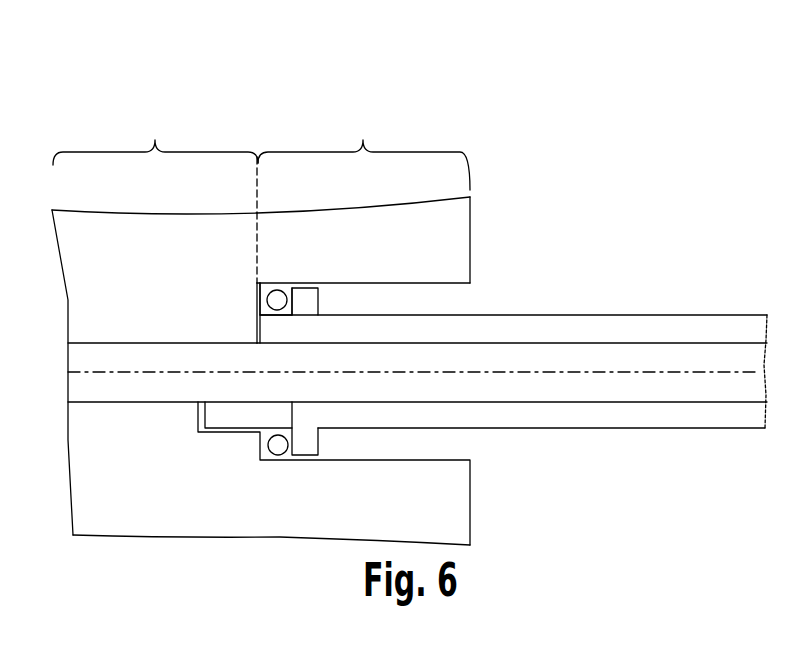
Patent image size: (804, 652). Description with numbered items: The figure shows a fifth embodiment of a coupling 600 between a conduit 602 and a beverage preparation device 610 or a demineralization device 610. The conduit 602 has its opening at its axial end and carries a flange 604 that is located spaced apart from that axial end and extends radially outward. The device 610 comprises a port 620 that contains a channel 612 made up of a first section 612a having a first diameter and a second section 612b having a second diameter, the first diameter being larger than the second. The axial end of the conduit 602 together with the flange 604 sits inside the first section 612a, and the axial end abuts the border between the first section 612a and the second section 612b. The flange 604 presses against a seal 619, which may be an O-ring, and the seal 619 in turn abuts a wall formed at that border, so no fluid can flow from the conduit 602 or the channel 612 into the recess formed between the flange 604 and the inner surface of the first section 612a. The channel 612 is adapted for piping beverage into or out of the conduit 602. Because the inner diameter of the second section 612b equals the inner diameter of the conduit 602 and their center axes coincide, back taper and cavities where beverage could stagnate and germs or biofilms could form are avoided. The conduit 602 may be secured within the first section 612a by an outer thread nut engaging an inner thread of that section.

The coupling 600 is at (602, 80).
The conduit 602 is at (708, 333).
The flange 604 is at (308, 298).
The beverage preparation device 610 is at (457, 505).
The channel 612 is at (157, 352).
The first section 612a is at (363, 208).
The second section 612b is at (155, 192).
The seal 619 is at (278, 298).
The port 620 is at (473, 298).